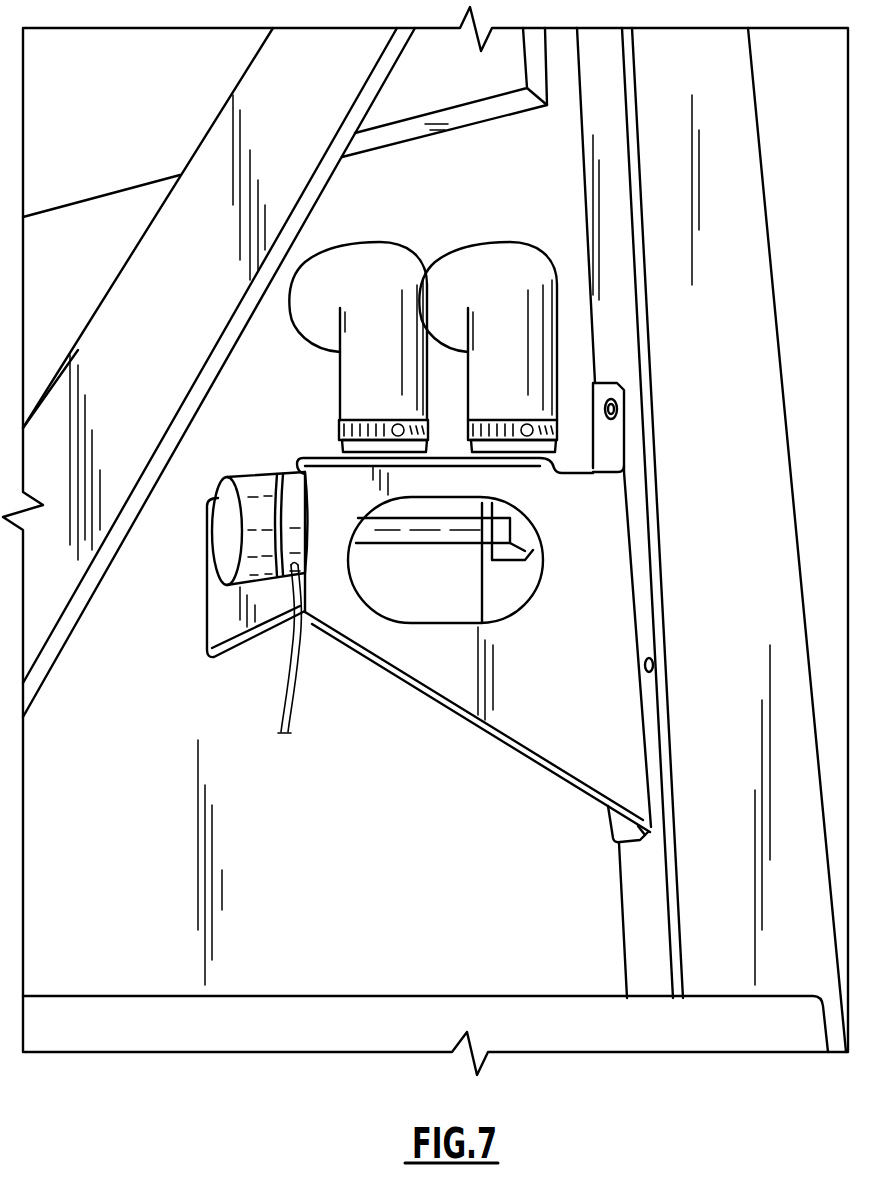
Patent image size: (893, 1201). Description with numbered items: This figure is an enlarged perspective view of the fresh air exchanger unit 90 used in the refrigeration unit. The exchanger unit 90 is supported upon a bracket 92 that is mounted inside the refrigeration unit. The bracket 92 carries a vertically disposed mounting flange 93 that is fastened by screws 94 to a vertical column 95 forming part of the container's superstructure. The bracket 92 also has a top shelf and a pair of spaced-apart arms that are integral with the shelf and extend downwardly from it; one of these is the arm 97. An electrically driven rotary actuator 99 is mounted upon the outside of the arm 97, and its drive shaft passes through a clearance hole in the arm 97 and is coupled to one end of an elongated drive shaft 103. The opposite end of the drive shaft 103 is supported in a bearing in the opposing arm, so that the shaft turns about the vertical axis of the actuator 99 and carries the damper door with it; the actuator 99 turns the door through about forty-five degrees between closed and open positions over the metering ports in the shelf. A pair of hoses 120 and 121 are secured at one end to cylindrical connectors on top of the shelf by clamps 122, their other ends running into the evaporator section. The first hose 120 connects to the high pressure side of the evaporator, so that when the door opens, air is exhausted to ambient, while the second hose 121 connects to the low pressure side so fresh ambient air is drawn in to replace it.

The fresh air exchanger unit 90 is at (422, 649).
The bracket 92 is at (368, 676).
The mounting flange 93 is at (656, 664).
The screws 94 is at (617, 410).
The vertical column 95 is at (637, 922).
The arm 97 is at (215, 623).
The rotary actuator 99 is at (225, 535).
The elongated drive shaft 103 is at (437, 535).
The first hose 120 is at (360, 393).
The second hose 121 is at (495, 257).
The clamps 122 is at (342, 428).